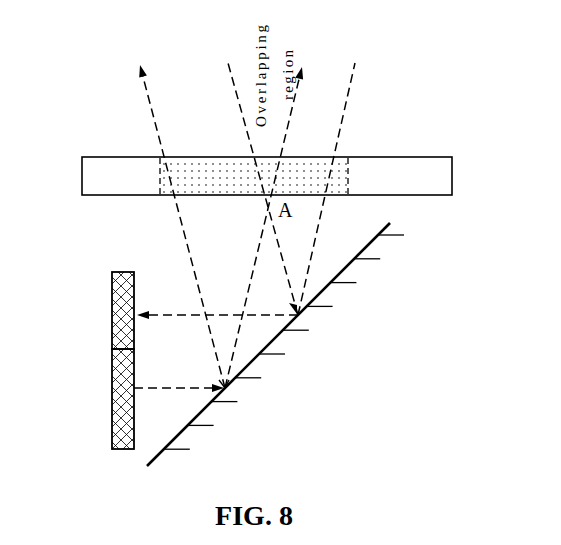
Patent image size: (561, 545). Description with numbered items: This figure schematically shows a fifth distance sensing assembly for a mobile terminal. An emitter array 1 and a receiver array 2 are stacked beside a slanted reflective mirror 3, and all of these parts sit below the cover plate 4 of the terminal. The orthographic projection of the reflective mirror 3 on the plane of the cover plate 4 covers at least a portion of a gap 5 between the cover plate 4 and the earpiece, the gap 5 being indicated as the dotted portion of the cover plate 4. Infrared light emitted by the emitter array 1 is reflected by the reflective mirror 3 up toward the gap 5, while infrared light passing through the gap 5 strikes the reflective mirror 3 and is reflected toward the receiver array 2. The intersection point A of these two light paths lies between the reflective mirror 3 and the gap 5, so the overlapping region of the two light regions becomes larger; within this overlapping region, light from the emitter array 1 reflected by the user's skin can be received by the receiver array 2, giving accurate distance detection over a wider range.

The emitter array 1 is at (113, 400).
The receiver array 2 is at (113, 310).
The reflective mirror 3 is at (322, 291).
The cover plate 4 is at (402, 157).
The gap 5 is at (337, 157).